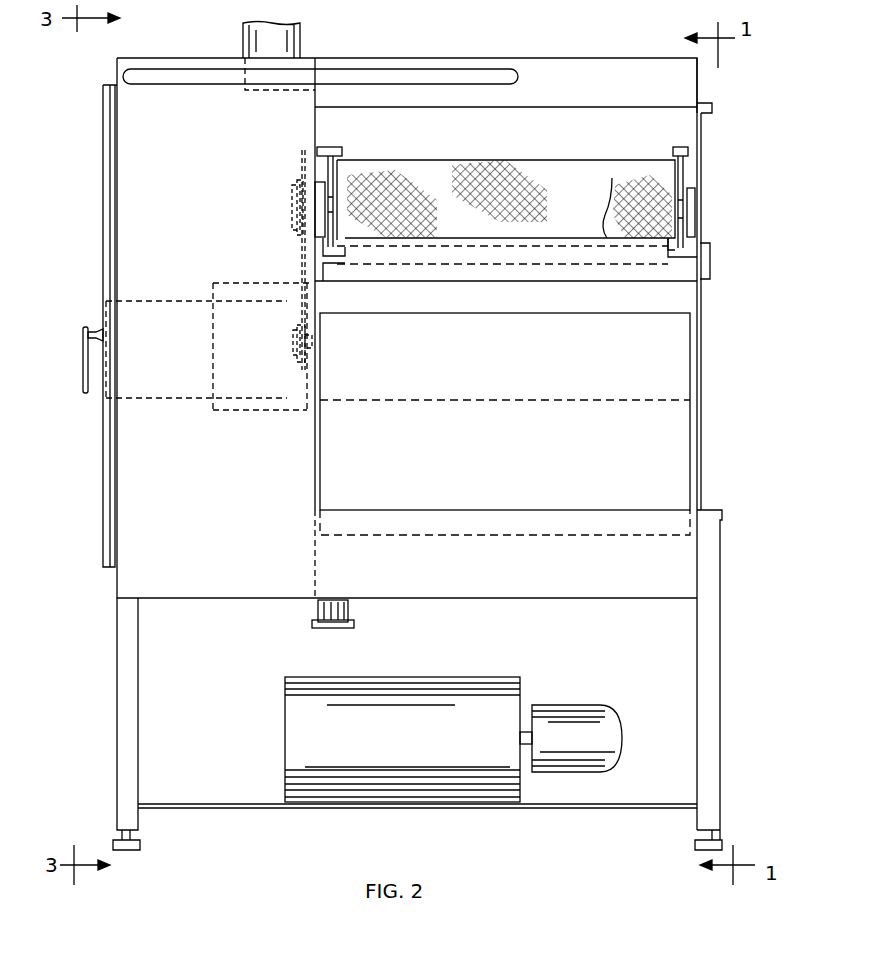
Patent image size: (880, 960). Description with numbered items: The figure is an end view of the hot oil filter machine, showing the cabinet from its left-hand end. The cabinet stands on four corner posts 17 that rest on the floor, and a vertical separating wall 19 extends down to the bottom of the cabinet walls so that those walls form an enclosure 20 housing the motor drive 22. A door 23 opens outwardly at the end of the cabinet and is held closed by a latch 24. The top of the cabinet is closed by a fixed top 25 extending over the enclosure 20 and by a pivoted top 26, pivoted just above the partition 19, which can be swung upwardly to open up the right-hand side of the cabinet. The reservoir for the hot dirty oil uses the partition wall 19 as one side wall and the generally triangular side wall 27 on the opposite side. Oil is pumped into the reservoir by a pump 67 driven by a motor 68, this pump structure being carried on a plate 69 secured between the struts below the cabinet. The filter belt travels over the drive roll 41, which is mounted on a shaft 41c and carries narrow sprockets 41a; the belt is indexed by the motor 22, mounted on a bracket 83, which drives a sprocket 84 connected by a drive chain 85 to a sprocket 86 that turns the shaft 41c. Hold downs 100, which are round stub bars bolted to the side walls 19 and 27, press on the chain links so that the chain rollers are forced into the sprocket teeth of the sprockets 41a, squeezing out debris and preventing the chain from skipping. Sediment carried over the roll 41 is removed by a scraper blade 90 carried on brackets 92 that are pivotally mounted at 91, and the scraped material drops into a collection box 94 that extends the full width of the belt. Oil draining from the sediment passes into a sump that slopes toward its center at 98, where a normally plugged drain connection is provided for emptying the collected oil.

The corner posts 17 is at (120, 733).
The separating wall 19 is at (313, 133).
The enclosure 20 is at (240, 494).
The motor drive 22 is at (325, 380).
The doors 23 is at (103, 487).
The latches 24 is at (83, 352).
The fixed top 25 is at (193, 65).
The pivoted top 26 is at (567, 72).
The side wall 27 is at (700, 152).
The drive roll 41 is at (532, 158).
The sprockets 41a is at (345, 168).
The shaft 41c is at (690, 195).
The pump 67 is at (482, 678).
The motor 68 is at (595, 707).
The plate 69 is at (283, 800).
The bracket 83 is at (268, 412).
The sprocket 84 is at (320, 362).
The drive chain 85 is at (300, 243).
The sprocket 86 is at (302, 160).
The scraper blade 90 is at (612, 178).
The pivot mounting 91 is at (345, 247).
The brackets 92 is at (323, 278).
The collection box 94 is at (672, 386).
The drain connection 98 is at (338, 600).
The hold downs 100 is at (330, 147).